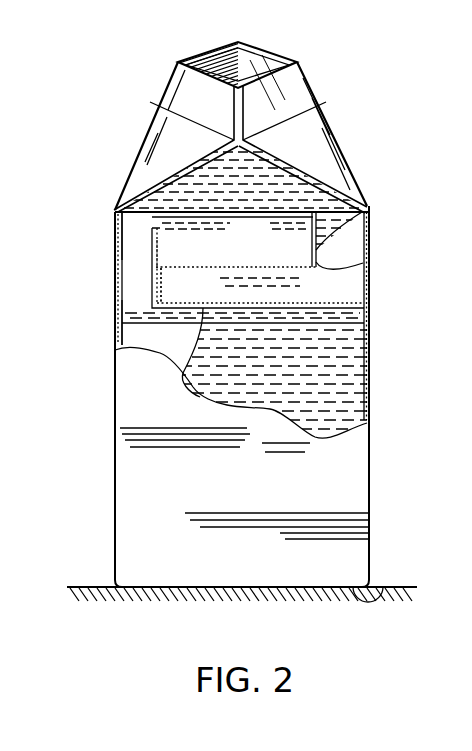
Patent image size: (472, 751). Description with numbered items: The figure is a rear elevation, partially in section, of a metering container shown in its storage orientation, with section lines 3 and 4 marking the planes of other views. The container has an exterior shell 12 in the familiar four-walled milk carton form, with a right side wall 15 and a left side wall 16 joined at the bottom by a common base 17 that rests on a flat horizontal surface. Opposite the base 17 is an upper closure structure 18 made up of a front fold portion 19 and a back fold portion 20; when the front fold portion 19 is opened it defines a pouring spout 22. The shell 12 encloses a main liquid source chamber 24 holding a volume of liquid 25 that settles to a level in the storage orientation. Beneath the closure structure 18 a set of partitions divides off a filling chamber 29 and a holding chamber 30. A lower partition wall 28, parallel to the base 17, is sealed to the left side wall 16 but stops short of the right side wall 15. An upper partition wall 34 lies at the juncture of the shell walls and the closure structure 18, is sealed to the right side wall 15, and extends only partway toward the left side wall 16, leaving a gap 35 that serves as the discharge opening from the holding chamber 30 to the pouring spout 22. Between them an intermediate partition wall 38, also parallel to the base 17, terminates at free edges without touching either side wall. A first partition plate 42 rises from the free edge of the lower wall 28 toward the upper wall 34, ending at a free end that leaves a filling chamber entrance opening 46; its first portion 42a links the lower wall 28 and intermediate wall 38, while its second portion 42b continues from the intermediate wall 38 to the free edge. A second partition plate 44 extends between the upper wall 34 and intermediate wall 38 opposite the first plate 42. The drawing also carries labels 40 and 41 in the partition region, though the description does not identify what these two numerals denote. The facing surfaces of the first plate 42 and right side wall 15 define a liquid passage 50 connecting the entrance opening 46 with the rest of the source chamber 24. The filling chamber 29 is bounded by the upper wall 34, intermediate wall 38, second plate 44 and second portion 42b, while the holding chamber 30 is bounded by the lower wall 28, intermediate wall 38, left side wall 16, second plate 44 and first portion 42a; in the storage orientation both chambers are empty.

The section line 3- 3 is at (191, 620).
The section line 4- 4 is at (106, 620).
The exterior shell 12 is at (370, 500).
The right side wall 15 is at (114, 347).
The left side wall 16 is at (373, 250).
The base 17 is at (383, 587).
The upper closure structure 18 is at (342, 111).
The front fold portion 19 is at (301, 61).
The back fold portion 20 is at (262, 118).
The pouring spout 22 is at (251, 48).
The main liquid source chamber 24 is at (365, 310).
The liquid 25 is at (331, 370).
The lower partition wall 28 is at (190, 372).
The filling chamber 29 is at (243, 252).
The holding chamber 30 is at (279, 296).
The upper partition wall 34 is at (235, 212).
The gap 35 is at (364, 195).
The intermediate partition wall 38 is at (182, 268).
The tray bottom 40 is at (182, 270).
The curved wall 41 is at (372, 270).
The first partition plate 42 is at (114, 265).
The first portion of first partition plate 42a is at (115, 315).
The second portion of first partition plate 42b is at (147, 256).
The second partition plate 44 is at (370, 218).
The filling chamber entrance opening 46 is at (137, 190).
The liquid passage 50 is at (127, 283).